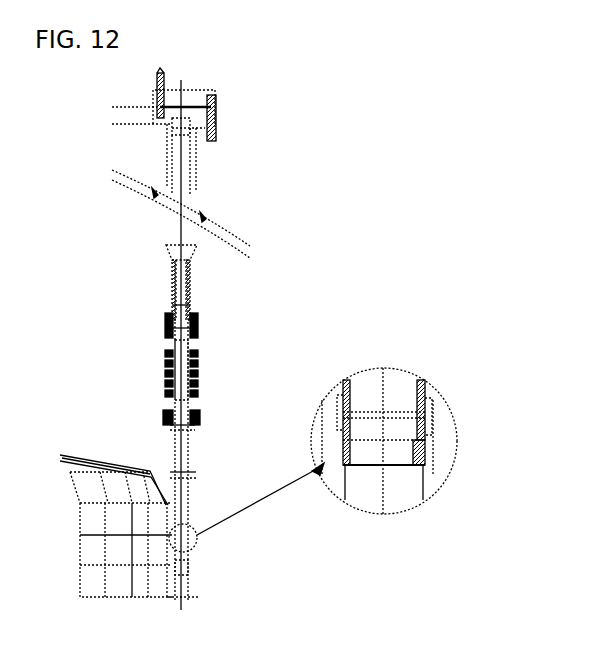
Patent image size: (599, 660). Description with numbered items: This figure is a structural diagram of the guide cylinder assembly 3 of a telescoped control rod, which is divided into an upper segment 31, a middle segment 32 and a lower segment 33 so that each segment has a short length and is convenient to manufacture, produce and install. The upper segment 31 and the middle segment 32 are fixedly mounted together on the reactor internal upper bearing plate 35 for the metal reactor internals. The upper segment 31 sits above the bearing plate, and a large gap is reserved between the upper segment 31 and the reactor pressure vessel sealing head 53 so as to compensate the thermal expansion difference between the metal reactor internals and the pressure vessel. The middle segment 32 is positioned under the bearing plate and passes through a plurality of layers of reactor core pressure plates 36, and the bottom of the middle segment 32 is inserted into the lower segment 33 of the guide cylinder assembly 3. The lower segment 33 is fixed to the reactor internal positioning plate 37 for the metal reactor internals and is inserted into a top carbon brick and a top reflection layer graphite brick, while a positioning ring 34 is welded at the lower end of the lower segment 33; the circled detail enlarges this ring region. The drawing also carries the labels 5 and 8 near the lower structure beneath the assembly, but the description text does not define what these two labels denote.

The upper mounting fixture 53 is at (193, 175).
The ring 31 is at (210, 216).
The rod assembly 3 is at (170, 251).
The upper coil block 35 is at (198, 318).
The coil 36 is at (200, 370).
The rod 32 is at (168, 375).
The lower coil block 37 is at (200, 412).
The grid panel structure 5 is at (150, 475).
The lower rod section 33 is at (190, 520).
The coupling 34 is at (193, 543).
The base connector 8 is at (197, 572).